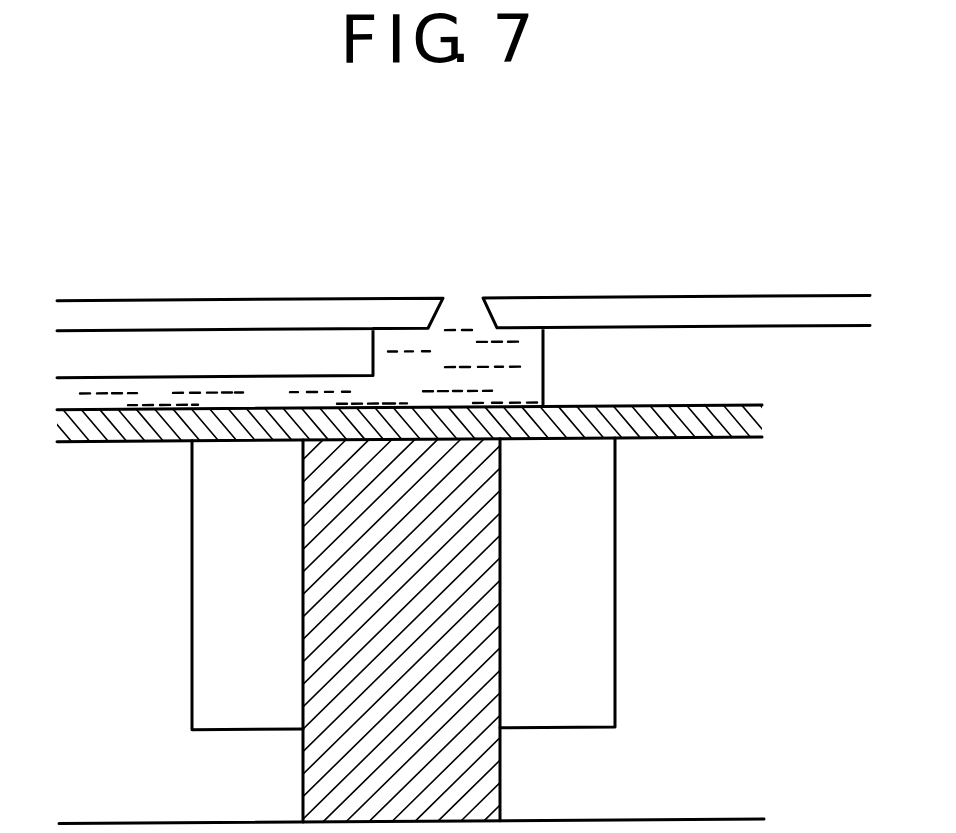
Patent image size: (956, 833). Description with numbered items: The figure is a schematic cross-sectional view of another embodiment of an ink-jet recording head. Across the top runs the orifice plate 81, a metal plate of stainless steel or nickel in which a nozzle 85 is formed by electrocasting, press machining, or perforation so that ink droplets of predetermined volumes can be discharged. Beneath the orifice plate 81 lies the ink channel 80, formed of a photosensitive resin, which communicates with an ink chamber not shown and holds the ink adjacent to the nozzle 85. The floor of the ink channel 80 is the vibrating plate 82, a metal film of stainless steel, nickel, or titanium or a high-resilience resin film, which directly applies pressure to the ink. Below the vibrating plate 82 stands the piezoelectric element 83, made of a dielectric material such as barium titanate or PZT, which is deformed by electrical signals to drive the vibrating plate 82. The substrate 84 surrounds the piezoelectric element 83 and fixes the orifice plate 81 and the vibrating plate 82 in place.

The ink channel 80 is at (323, 395).
The orifice plate 81 is at (687, 304).
The vibrating plate 82 is at (722, 443).
The piezoelectric element 83 is at (493, 646).
The substrate 84 is at (660, 542).
The nozzle 85 is at (462, 315).